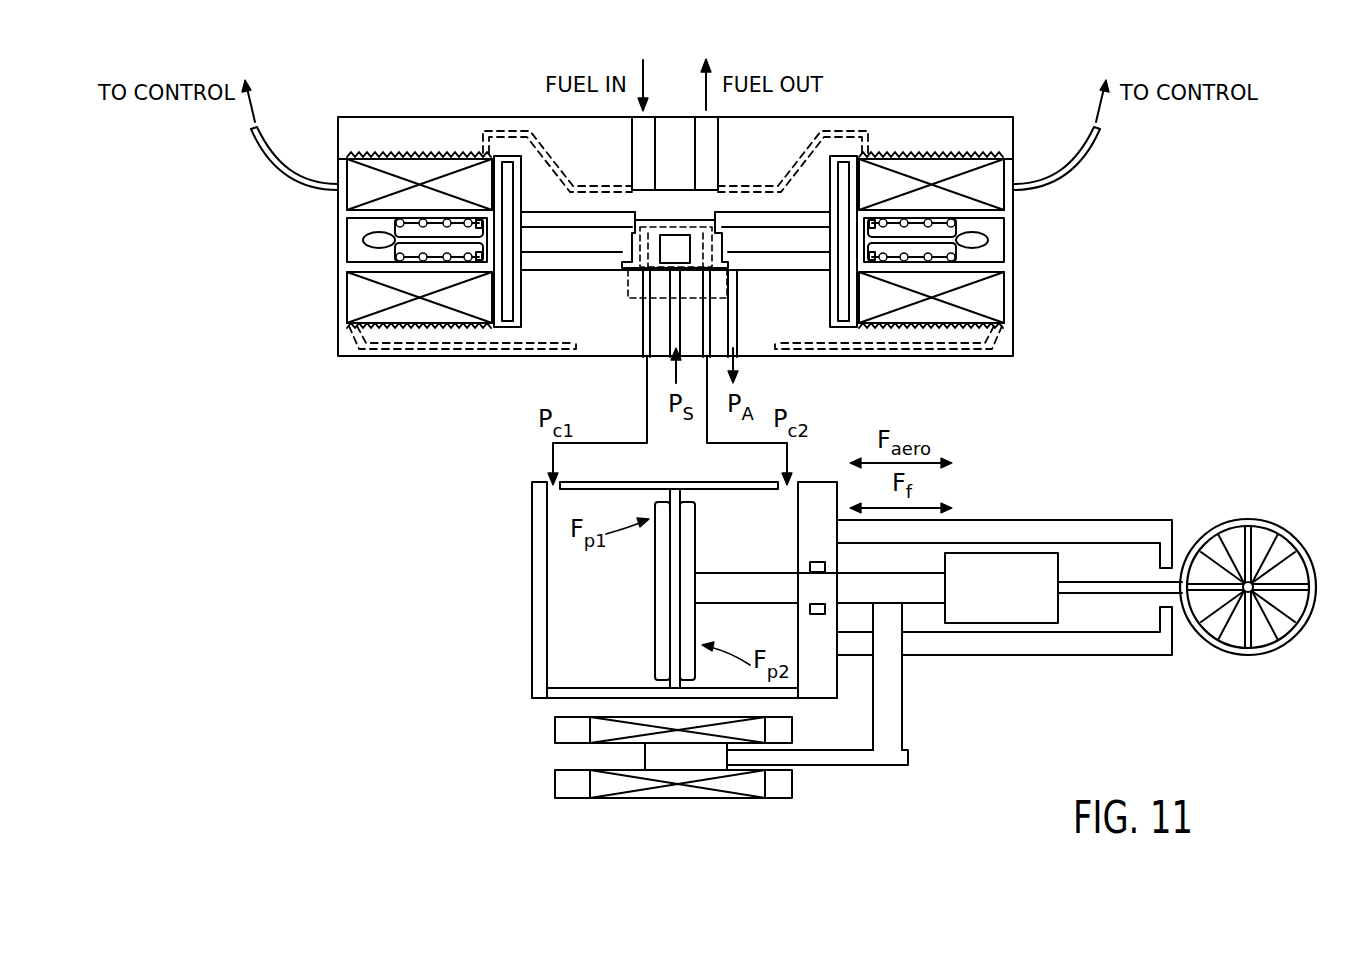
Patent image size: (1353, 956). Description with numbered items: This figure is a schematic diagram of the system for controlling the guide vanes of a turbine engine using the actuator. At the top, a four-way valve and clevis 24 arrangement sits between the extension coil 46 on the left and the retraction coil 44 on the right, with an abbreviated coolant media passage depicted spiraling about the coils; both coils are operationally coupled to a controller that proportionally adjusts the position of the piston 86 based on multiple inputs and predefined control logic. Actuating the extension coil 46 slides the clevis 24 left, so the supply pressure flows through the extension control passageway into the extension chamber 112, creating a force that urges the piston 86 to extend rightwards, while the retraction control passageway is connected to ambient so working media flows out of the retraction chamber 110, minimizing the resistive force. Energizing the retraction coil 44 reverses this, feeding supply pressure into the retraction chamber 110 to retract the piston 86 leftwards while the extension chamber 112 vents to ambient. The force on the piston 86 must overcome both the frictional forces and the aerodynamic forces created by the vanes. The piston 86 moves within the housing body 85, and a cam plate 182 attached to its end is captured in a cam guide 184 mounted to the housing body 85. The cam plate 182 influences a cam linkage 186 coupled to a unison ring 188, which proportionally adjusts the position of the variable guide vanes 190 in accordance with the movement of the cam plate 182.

The clevis 24 is at (672, 212).
The retraction coil 44 is at (1007, 293).
The extension coil 46 is at (347, 302).
The housing body 85 is at (830, 525).
The piston 86 is at (737, 614).
The retraction chamber 110 is at (763, 543).
The extension chamber 112 is at (620, 643).
The cam plate 182 is at (1017, 603).
The cam guide 184 is at (1037, 533).
The cam linkage 186 is at (1113, 590).
The unison ring 188 is at (1198, 540).
The variable guide vanes 190 is at (1260, 627).